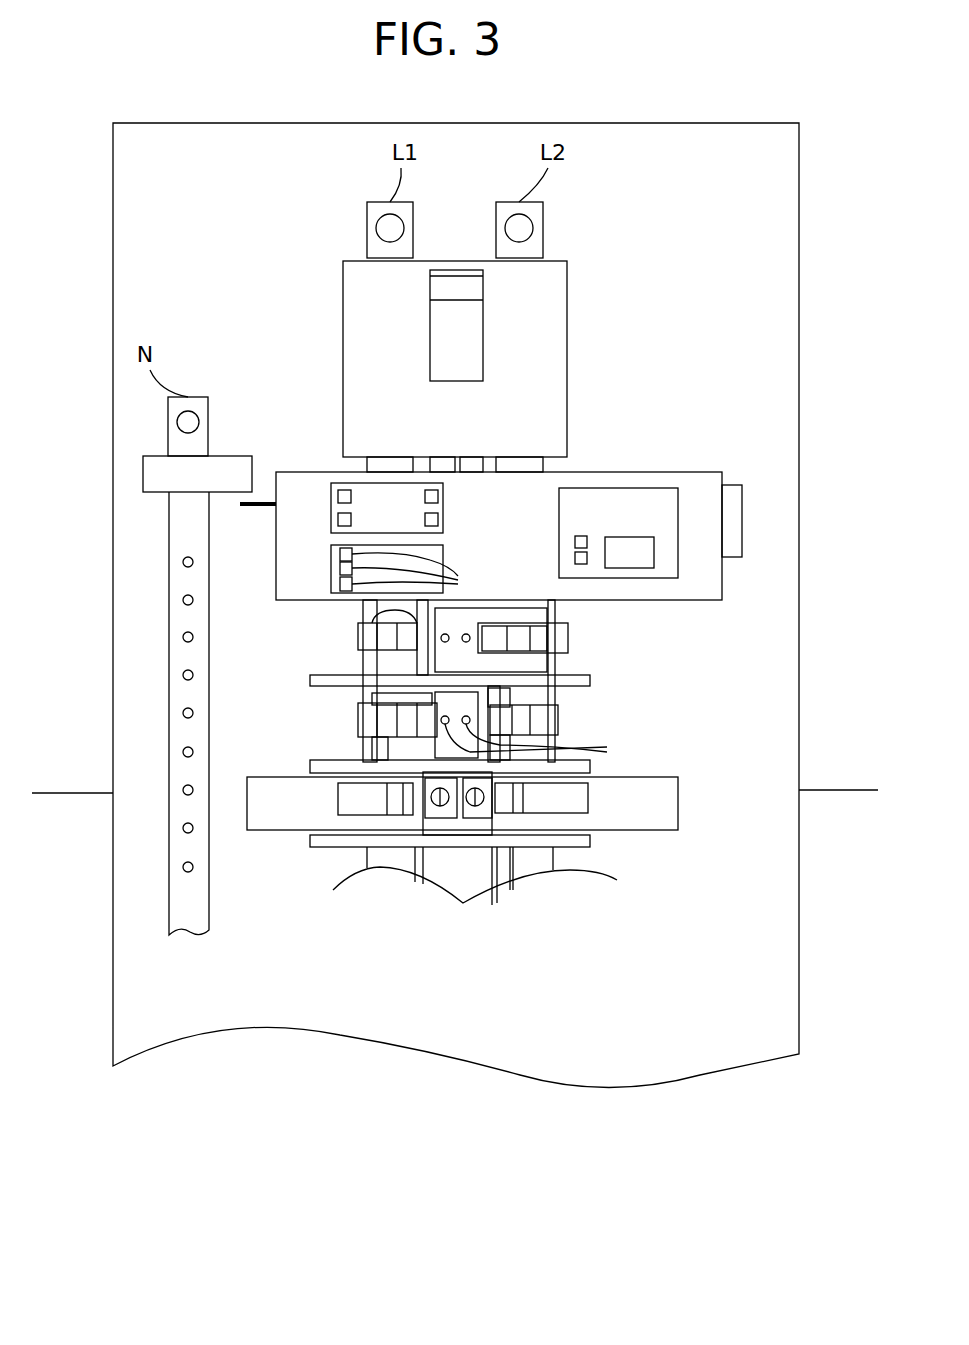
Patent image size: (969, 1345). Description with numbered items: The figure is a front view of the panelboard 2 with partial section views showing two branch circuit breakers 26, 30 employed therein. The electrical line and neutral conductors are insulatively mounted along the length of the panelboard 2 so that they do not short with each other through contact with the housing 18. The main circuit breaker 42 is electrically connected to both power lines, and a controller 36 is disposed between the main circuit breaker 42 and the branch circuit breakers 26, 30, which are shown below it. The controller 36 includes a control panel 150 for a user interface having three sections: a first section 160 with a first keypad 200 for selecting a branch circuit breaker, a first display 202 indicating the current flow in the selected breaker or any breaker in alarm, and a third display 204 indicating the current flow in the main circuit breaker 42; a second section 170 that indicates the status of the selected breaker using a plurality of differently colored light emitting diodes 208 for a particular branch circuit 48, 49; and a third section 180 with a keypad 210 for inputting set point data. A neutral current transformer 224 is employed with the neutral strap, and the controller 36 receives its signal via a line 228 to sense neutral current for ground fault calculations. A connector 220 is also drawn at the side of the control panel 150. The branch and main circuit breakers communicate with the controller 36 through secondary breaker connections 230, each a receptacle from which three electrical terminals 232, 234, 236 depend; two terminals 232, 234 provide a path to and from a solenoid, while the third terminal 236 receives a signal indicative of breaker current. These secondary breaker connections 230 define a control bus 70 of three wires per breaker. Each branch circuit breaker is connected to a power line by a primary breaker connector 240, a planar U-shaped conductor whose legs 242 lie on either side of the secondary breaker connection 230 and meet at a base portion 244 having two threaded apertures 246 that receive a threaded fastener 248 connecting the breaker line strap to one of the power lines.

The panelboard 2 is at (776, 1109).
The housing 18 is at (799, 212).
The branch circuit breaker 26 is at (678, 810).
The branch circuit breaker 30 is at (267, 830).
The controller 36 is at (683, 413).
The main circuit breaker 42 is at (567, 298).
The branch circuit 48 is at (92, 790).
The branch circuit 49 is at (828, 790).
The control bus 70 is at (450, 457).
The control panel 150 is at (711, 587).
The first section 160 is at (342, 488).
The second section 170 is at (331, 568).
The third section 180 is at (600, 500).
The first keypad 200 is at (338, 519).
The first display 202 is at (438, 520).
The third display 204 is at (438, 497).
The light emitting diodes 208 is at (426, 572).
The keypad 210 is at (587, 540).
The communication connector 220 is at (735, 492).
The neutral current transformer 224 is at (113, 473).
The line 228 is at (238, 502).
The secondary breaker connection 230 is at (358, 636).
The electrical terminal 232 is at (358, 642).
The electrical terminal 234 is at (370, 625).
The electrical terminal 236 is at (375, 612).
The primary breaker connector 240 is at (547, 620).
The legs 242 is at (372, 700).
The base portion 244 is at (372, 660).
The threaded apertures 246 is at (547, 744).
The threaded fastener 248 is at (431, 800).